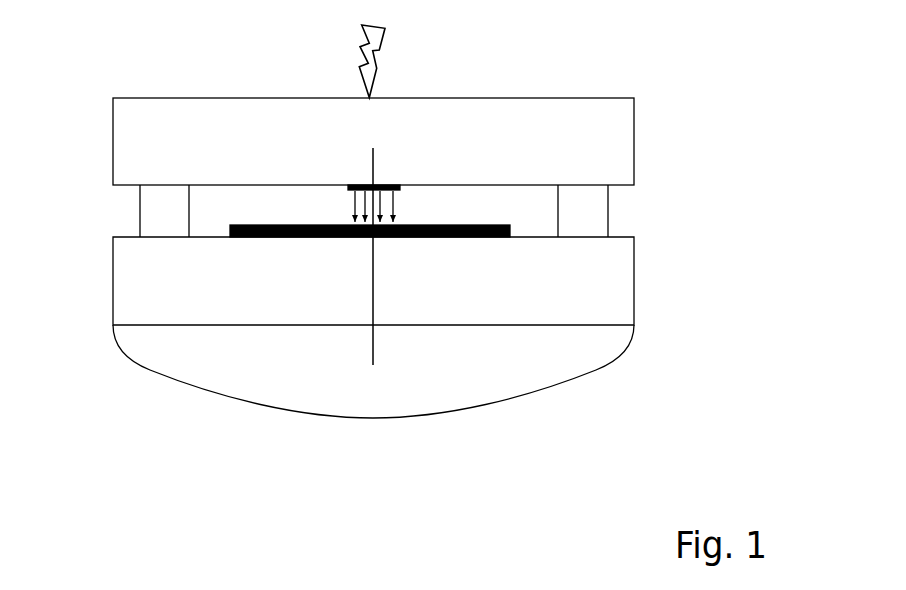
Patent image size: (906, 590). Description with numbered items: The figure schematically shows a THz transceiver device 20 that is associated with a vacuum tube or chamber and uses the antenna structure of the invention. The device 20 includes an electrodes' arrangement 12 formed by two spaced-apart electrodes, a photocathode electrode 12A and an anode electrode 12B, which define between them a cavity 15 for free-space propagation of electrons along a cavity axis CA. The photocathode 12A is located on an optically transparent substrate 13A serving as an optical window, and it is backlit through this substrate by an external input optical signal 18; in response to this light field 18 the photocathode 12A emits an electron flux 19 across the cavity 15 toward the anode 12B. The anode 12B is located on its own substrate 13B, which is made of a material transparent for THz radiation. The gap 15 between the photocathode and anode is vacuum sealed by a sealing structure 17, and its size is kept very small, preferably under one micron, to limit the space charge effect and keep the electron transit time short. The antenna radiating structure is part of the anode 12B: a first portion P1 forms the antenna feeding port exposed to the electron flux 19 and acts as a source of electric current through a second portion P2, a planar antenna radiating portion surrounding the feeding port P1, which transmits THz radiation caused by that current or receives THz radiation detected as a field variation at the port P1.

The electrodes' arrangement 12 is at (450, 198).
The photocathode electrode 12A is at (390, 170).
The anode electrode 12B is at (457, 248).
The optically transparent substrate 13A is at (148, 115).
The anode substrate 13B is at (135, 299).
The cavity 15 is at (225, 214).
The sealing structure 17 is at (588, 217).
The input optical signal 18 is at (385, 38).
The electron flux 19 is at (347, 199).
The THz transceiver device 20 is at (398, 214).
The cavity axis CA is at (373, 346).
The antenna feeding port P1 is at (373, 237).
The antenna radiating structure P2 is at (420, 237).